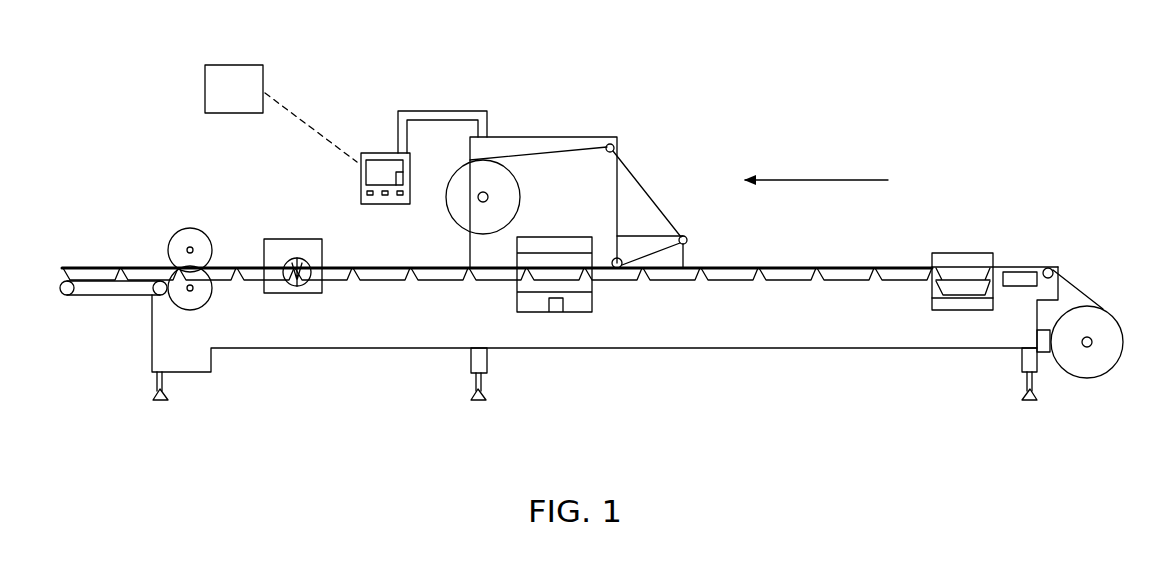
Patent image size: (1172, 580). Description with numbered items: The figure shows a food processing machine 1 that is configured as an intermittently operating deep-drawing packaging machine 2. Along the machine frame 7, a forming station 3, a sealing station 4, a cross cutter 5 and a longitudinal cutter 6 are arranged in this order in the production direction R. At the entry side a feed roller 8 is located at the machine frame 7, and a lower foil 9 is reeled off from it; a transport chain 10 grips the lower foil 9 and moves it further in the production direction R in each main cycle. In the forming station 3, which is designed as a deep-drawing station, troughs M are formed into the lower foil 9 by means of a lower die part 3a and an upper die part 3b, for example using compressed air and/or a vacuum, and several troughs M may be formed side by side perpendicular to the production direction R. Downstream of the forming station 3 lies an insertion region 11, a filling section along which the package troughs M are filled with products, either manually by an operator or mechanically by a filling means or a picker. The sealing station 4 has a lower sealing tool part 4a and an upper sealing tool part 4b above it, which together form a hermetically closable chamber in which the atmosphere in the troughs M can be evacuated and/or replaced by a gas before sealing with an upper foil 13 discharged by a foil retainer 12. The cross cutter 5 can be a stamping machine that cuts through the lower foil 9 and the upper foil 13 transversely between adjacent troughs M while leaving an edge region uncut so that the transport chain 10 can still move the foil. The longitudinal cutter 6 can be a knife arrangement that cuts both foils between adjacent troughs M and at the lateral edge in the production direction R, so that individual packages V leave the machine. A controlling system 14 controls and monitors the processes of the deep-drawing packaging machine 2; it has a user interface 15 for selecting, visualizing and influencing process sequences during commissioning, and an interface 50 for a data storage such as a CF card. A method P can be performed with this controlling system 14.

The food processing machine 1 is at (861, 31).
The deep-drawing packaging machine 2 is at (832, 63).
The forming station 3 is at (941, 287).
The lower die part 3a is at (937, 300).
The upper die part 3b is at (955, 258).
The sealing station 4 is at (566, 195).
The lower sealing tool part 4a is at (518, 300).
The upper sealing tool part 4b is at (580, 245).
The cross cutter 5 is at (281, 245).
The longitudinal cutter 6 is at (188, 226).
The machine frame 7 is at (257, 356).
The feed roller 8 is at (1098, 315).
The lower foil 9 is at (1080, 287).
The transport chain 10 is at (1033, 267).
The insertion region 11 is at (764, 259).
The foil retainer 12 is at (503, 147).
The upper foil 13 is at (579, 147).
The controlling system 14 is at (365, 155).
The user interface 15 is at (383, 168).
The interface for a data storage 50 is at (403, 197).
The method P is at (281, 113).
The individual packages V is at (83, 260).
The production direction R is at (816, 161).
The troughs M is at (957, 281).